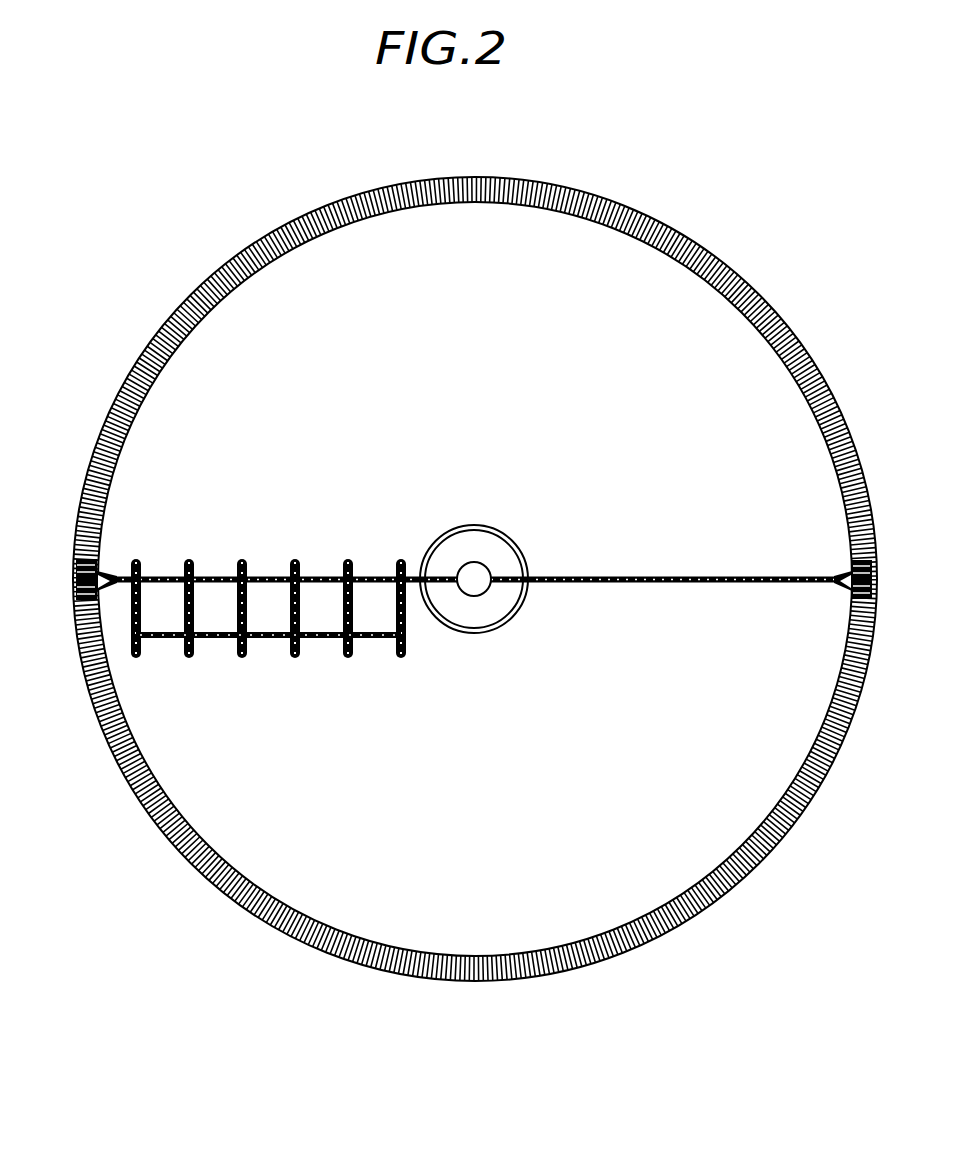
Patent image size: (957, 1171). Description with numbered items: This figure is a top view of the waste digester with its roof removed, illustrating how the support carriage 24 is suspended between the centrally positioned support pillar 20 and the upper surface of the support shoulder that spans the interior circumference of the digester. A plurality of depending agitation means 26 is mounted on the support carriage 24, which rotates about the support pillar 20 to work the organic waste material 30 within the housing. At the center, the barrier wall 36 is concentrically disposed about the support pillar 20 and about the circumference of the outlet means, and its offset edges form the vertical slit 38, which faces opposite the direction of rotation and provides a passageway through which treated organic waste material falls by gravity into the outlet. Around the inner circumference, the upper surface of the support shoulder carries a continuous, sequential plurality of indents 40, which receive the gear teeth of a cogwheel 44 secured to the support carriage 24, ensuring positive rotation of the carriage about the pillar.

The support pillar 20 is at (476, 575).
The support carriage 24 is at (476, 601).
The agitation means 26 is at (137, 654).
The organic waste material 30 is at (507, 574).
The barrier wall 36 is at (513, 537).
The vertical slit opening 38 is at (509, 554).
The indents 40 is at (83, 673).
The cogwheel 44 is at (84, 562).